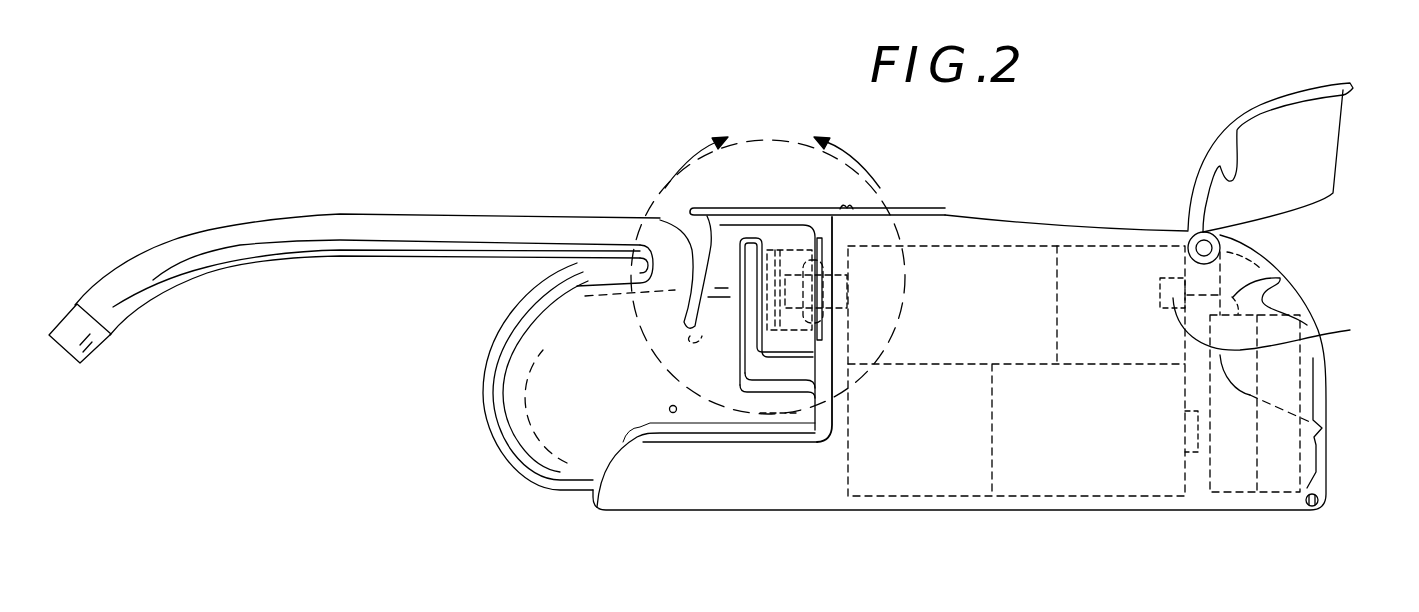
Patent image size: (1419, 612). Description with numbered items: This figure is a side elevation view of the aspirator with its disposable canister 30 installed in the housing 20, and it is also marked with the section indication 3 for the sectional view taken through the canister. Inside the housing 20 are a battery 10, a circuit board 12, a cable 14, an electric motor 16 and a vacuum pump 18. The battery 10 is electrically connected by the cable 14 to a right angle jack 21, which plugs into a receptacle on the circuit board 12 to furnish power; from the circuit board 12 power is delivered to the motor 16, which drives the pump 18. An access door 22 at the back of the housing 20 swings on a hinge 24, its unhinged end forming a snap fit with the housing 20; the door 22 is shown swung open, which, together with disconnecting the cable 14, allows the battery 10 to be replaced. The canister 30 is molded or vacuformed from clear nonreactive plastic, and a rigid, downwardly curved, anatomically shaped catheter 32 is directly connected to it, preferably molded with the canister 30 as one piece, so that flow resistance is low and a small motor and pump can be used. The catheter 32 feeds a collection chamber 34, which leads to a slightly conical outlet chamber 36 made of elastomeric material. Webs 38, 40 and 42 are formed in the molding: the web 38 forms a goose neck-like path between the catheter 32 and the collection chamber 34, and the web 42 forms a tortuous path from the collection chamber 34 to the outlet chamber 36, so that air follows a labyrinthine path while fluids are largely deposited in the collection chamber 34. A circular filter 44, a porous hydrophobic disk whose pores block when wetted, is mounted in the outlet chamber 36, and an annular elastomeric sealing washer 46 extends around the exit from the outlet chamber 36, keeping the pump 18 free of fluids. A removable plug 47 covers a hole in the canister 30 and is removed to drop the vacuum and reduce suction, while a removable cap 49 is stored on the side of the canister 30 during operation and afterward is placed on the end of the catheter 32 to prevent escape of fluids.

The section line for FIG. 3 is at (768, 257).
The battery 10 is at (1233, 483).
The circuit board 12 is at (1100, 267).
The cable 14 is at (1280, 278).
The electric motor 16 is at (1090, 483).
The vacuum pump 18 is at (1027, 283).
The housing 20 is at (967, 217).
The right angle jack 21 is at (1350, 330).
The access door 22 is at (1257, 105).
The hinge 24 is at (1215, 236).
The disposable canister 30 is at (464, 349).
The catheter 32 is at (160, 246).
The collection chamber 34 is at (520, 413).
The outlet chamber 36 is at (797, 330).
The web 38 is at (708, 219).
The web 40 is at (587, 275).
The web 42 is at (762, 368).
The circular filter 44 is at (780, 263).
The annular elastomeric sealing washer 46 is at (830, 333).
The removable plug 47 is at (672, 413).
The removable cap 49 is at (100, 352).